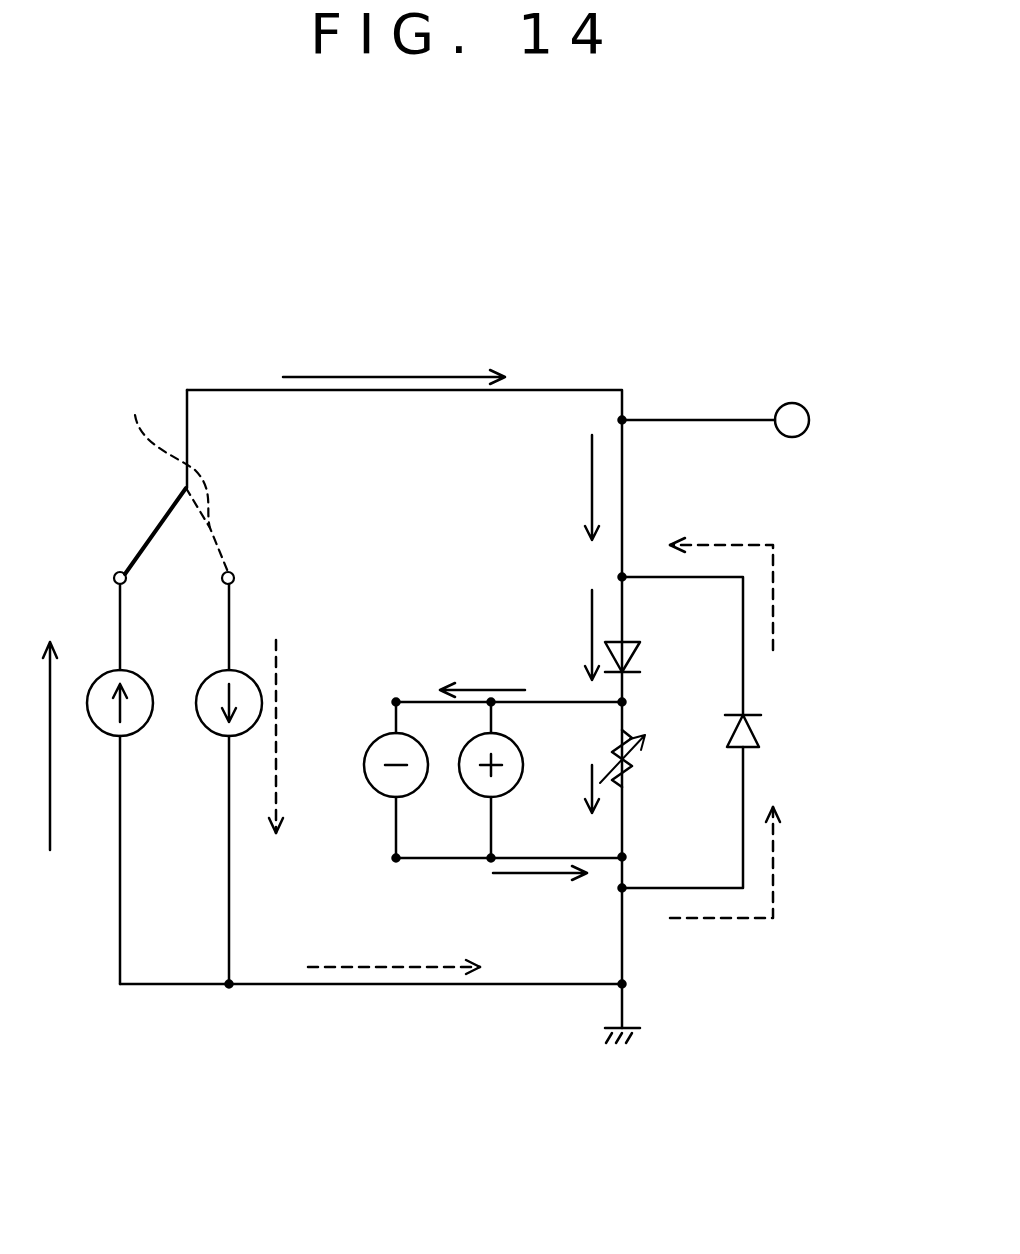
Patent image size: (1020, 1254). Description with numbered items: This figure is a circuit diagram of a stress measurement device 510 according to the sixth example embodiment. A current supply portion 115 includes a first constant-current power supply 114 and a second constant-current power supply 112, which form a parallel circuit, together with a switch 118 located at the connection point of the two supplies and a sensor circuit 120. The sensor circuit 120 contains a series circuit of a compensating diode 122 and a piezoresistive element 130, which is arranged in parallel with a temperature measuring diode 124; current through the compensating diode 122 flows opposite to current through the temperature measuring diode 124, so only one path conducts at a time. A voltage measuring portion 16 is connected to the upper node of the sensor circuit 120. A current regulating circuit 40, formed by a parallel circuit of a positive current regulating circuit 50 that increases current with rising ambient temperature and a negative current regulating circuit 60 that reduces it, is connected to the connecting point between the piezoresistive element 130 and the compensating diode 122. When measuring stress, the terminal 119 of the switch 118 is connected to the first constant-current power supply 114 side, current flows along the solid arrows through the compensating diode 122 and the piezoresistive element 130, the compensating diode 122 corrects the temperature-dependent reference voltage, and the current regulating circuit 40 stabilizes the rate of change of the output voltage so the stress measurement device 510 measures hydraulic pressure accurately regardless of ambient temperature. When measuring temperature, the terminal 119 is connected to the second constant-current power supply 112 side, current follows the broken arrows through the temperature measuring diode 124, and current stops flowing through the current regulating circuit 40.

The stress measurement device 510 is at (722, 300).
The voltage measuring portion 16 is at (809, 420).
The current regulating circuit 40 is at (524, 666).
The positive current regulating circuit 50 is at (518, 740).
The negative current regulating circuit 60 is at (372, 740).
The second constant-current power supply 112 is at (242, 670).
The first constant-current power supply 114 is at (108, 670).
The current supply portion 115 is at (194, 1010).
The switch 118 is at (252, 521).
The terminal 119 is at (165, 510).
The sensor circuit 120 is at (661, 556).
The compensating diode 122 is at (635, 658).
The temperature measuring diode 124 is at (757, 727).
The piezoresistive element 130 is at (635, 763).